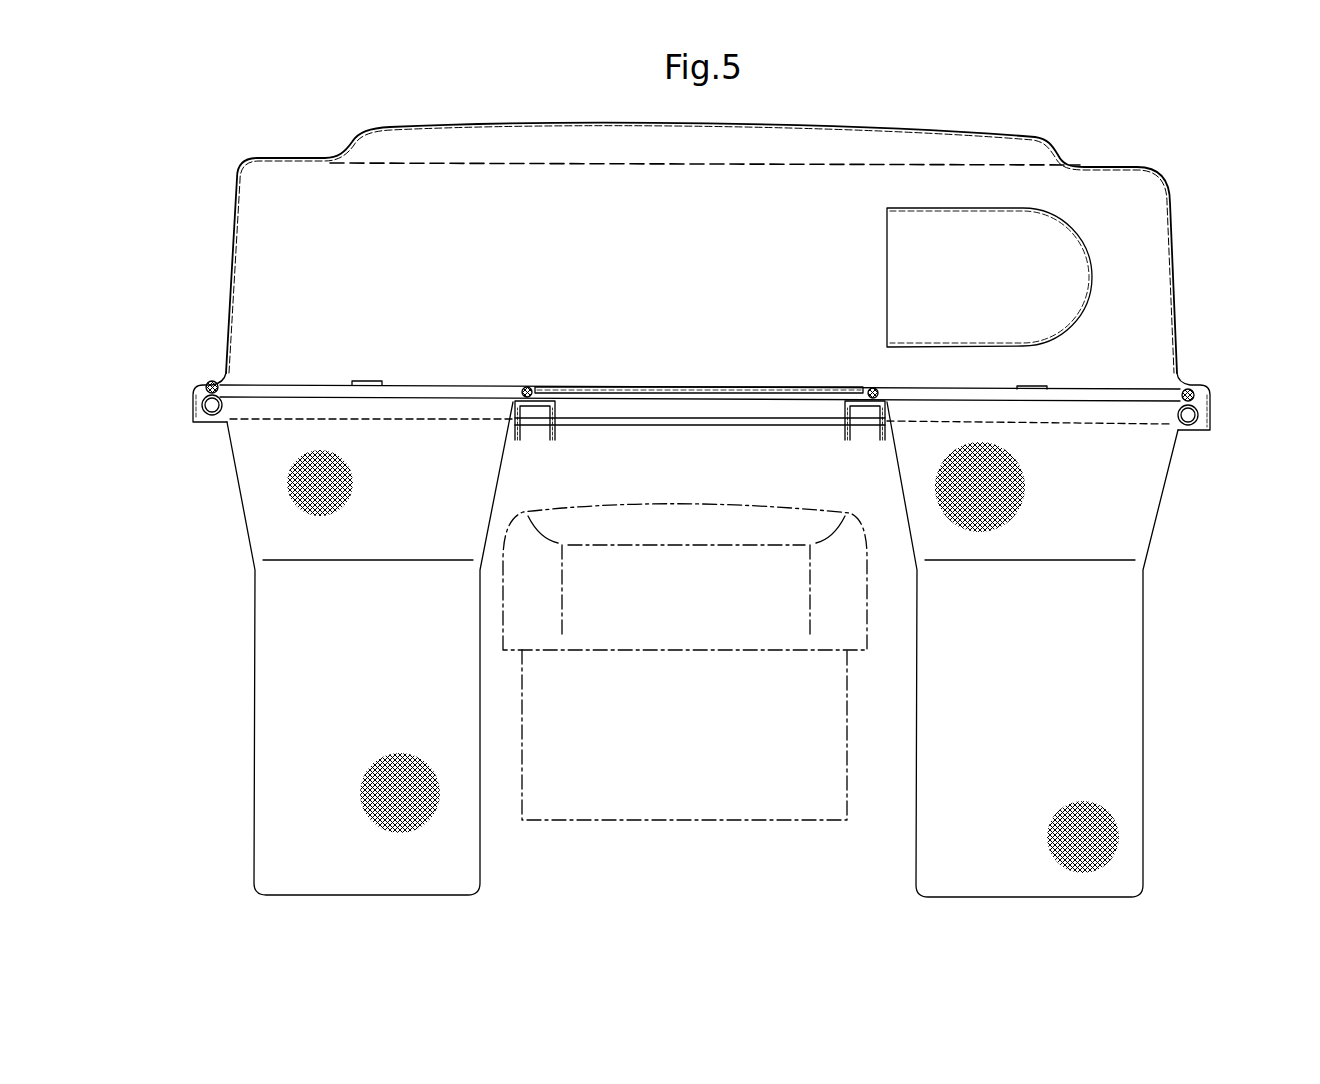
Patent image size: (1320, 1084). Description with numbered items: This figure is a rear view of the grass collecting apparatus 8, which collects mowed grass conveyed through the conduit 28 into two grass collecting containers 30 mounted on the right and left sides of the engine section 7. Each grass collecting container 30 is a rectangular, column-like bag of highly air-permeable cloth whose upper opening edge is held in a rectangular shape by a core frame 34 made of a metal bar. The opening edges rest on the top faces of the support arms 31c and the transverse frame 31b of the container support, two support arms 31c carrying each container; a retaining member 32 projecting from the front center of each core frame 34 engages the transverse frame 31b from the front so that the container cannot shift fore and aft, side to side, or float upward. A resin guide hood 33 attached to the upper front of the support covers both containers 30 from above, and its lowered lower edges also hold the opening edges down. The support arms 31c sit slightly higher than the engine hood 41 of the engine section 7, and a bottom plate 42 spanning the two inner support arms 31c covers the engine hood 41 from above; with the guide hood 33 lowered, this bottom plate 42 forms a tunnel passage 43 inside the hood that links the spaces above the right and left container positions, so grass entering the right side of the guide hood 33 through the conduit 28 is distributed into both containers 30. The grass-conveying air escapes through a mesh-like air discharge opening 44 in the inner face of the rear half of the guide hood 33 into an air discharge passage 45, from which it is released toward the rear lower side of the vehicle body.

The engine section 7 is at (643, 822).
The grass collecting apparatus 8 is at (232, 149).
The conduit 28 is at (1042, 215).
The grass collecting container 30 is at (252, 752).
The transverse frame 31b is at (703, 421).
The support arm 31c is at (212, 416).
The retaining member 32 is at (370, 380).
The guide hood 33 is at (1178, 238).
The core frame 34 is at (208, 384).
The engine hood 41 is at (503, 595).
The bottom plate 42 is at (676, 387).
The tunnel passage 43 is at (740, 270).
The air discharge opening 44 is at (527, 168).
The air discharge passage 45 is at (748, 146).